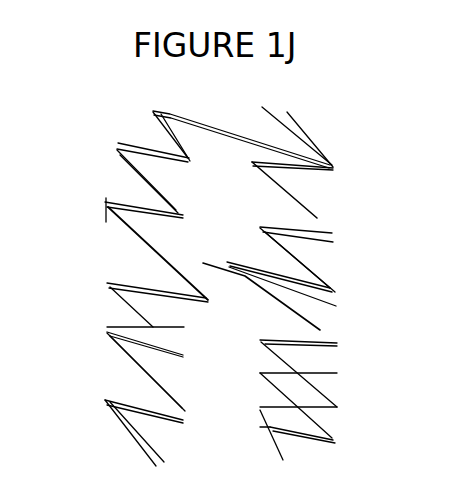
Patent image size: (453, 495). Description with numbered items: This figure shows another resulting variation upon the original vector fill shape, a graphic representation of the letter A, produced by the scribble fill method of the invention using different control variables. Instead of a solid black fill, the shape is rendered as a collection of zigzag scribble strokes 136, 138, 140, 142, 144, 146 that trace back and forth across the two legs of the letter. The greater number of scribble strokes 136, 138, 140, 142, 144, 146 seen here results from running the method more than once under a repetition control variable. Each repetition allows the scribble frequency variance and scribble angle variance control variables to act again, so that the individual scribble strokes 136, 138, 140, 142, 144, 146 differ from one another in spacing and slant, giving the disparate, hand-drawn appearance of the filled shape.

The scribble stroke 136 is at (146, 146).
The scribble stroke 138 is at (141, 238).
The scribble stroke 140 is at (318, 216).
The scribble stroke 142 is at (125, 327).
The scribble stroke 144 is at (324, 334).
The scribble stroke 146 is at (322, 437).